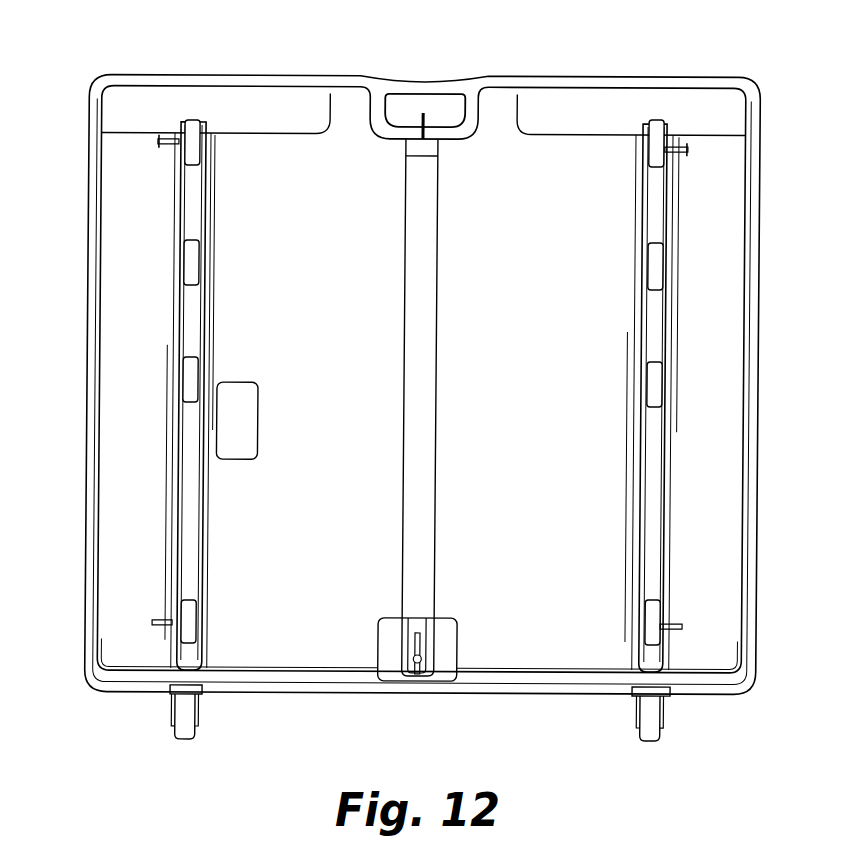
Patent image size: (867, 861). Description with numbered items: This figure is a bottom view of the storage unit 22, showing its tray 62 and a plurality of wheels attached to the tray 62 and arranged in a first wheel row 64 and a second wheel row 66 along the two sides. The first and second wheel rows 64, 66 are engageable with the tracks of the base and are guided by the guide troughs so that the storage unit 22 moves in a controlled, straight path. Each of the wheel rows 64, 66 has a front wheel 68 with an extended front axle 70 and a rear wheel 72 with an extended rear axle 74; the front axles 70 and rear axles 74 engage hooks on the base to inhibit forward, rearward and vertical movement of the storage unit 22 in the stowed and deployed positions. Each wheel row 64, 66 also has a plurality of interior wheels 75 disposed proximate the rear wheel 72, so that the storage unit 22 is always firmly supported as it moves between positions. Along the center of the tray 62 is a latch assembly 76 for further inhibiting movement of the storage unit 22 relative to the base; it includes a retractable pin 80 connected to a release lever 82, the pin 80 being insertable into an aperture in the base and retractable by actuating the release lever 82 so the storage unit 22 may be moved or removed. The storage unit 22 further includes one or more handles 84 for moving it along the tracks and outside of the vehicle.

The storage unit 22 is at (86, 540).
The tray 62 is at (86, 606).
The first wheel row 64 is at (656, 100).
The second wheel row 66 is at (190, 100).
The front wheel 68 is at (187, 650).
The front axle 70 is at (161, 627).
The rear wheel 72 is at (186, 118).
The rear axle 74 is at (162, 148).
The interior wheels 75 is at (182, 395).
The latch assembly 76 is at (418, 712).
The pin 80 is at (415, 660).
The release lever 82 is at (409, 115).
The handles 84 is at (248, 77).